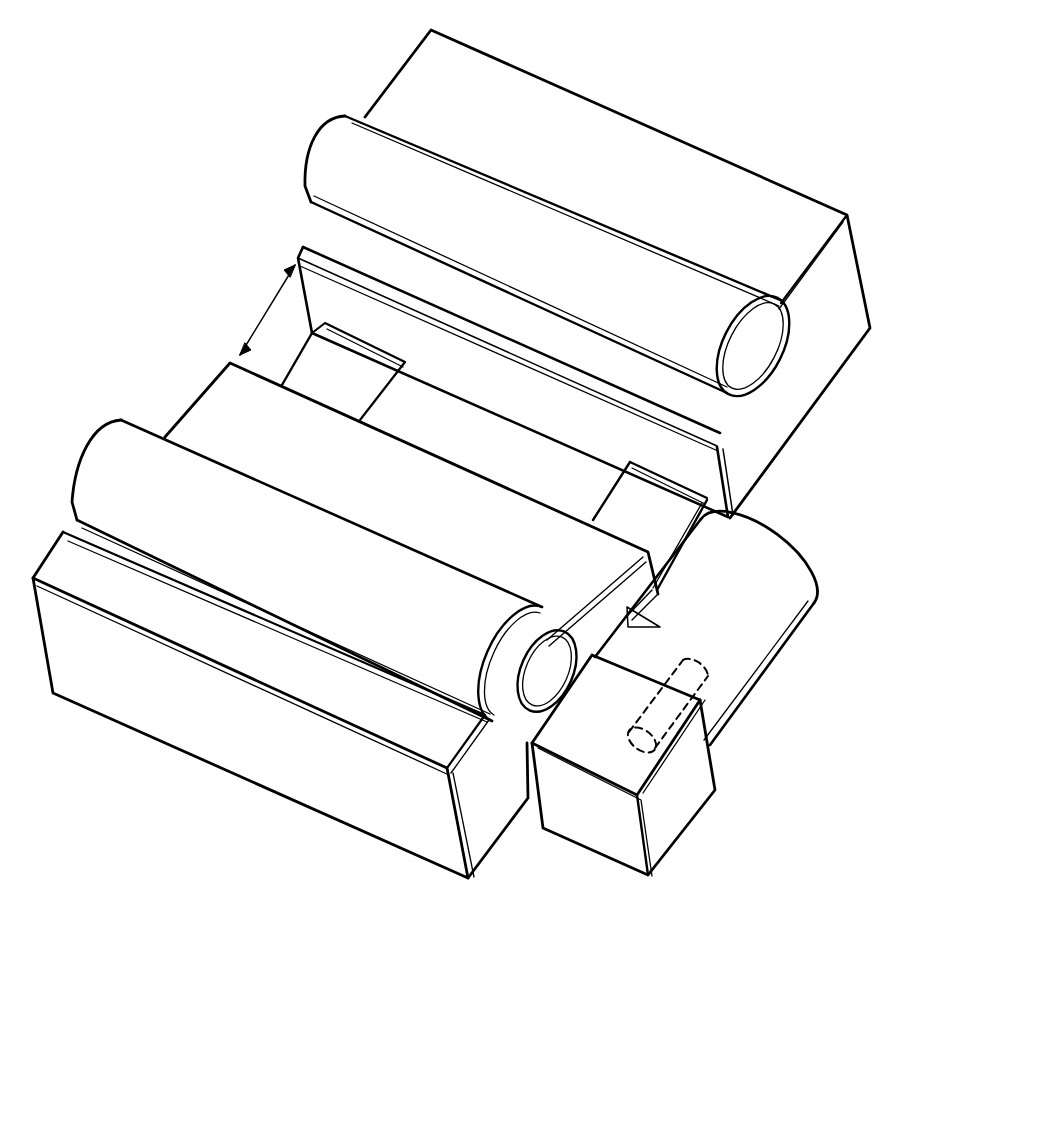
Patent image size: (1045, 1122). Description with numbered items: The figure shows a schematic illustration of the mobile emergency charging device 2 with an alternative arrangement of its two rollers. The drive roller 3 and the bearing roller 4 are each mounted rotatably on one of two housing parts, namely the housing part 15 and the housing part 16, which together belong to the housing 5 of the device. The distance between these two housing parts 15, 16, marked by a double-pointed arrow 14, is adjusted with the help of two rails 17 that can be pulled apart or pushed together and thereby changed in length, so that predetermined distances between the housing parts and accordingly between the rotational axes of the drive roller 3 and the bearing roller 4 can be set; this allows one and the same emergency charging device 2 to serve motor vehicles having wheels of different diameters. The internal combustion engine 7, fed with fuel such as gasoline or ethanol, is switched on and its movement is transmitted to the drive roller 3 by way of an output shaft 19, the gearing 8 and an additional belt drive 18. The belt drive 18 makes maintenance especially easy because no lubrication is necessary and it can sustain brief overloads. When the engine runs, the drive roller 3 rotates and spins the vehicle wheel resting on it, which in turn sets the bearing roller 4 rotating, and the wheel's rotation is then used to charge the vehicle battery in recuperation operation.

The emergency charging device 2 is at (868, 258).
The drive roller 3 is at (108, 468).
The bearing roller 4 is at (350, 150).
The housing 5 is at (343, 806).
The internal combustion engine 7 is at (756, 637).
The gearing 8 is at (680, 803).
The double-pointed arrow 14 is at (268, 306).
The housing part 15 is at (157, 685).
The housing part 16 is at (652, 153).
The rails 17 is at (315, 383).
The belt drive 18 is at (513, 678).
The output shaft 19 is at (687, 680).